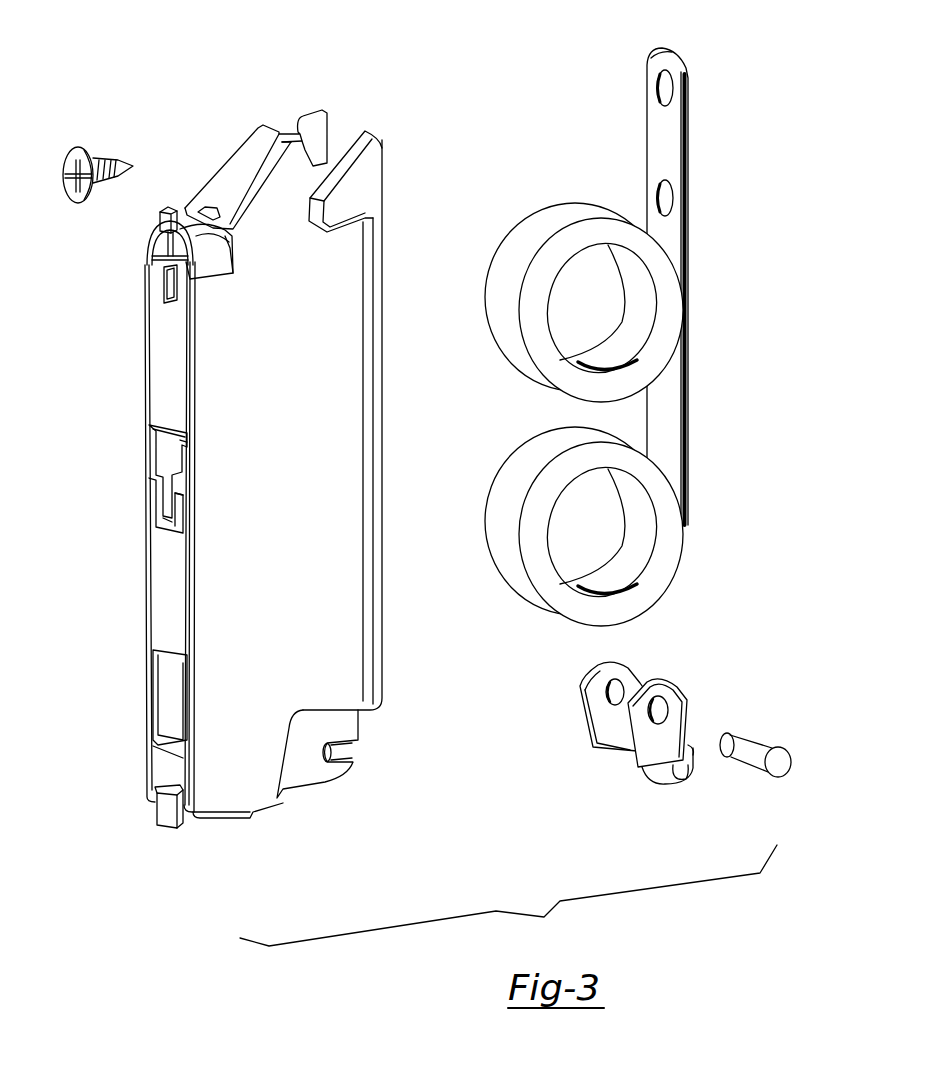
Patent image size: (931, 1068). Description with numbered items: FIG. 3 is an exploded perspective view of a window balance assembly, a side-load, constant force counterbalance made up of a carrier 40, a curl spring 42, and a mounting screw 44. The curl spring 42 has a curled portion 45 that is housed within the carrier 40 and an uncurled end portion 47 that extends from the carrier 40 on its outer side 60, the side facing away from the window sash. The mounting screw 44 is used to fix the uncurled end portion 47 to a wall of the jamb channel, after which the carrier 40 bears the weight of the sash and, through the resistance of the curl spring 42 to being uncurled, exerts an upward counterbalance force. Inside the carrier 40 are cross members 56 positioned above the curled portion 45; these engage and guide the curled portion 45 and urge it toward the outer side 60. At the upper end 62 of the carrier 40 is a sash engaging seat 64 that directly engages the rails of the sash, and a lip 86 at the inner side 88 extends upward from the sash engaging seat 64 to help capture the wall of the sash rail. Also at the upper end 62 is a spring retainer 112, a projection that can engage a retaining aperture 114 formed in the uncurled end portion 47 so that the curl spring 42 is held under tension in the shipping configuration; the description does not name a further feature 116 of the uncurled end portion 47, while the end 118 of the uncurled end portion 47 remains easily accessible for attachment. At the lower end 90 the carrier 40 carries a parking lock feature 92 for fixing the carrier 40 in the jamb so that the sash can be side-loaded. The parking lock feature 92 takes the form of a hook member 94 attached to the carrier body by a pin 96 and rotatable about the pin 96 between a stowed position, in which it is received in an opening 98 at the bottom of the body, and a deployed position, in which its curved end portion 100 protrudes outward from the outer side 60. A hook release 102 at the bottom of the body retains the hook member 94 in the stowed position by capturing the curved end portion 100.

The carrier 40 is at (392, 77).
The curl spring 42 is at (619, 289).
The mounting screw 44 is at (70, 150).
The curled portion 45 is at (535, 232).
The uncurled end portion 47 is at (663, 272).
The cross members 56 is at (162, 300).
The outer side 60 is at (383, 292).
The upper end 62 is at (210, 72).
The sash engaging seat 64 is at (207, 253).
The lip 86 is at (168, 208).
The inner side 88 is at (147, 255).
The lower end 90 is at (323, 797).
The parking lock feature 92 is at (508, 895).
The hook member 94 is at (657, 733).
The pin 96 is at (787, 750).
The opening 98 is at (165, 762).
The curved end portion 100 is at (688, 790).
The hook release 102 is at (160, 833).
The spring retainer 112 is at (293, 127).
The retaining aperture 114 is at (657, 187).
The upper hole 116 is at (657, 92).
The end 118 is at (675, 53).